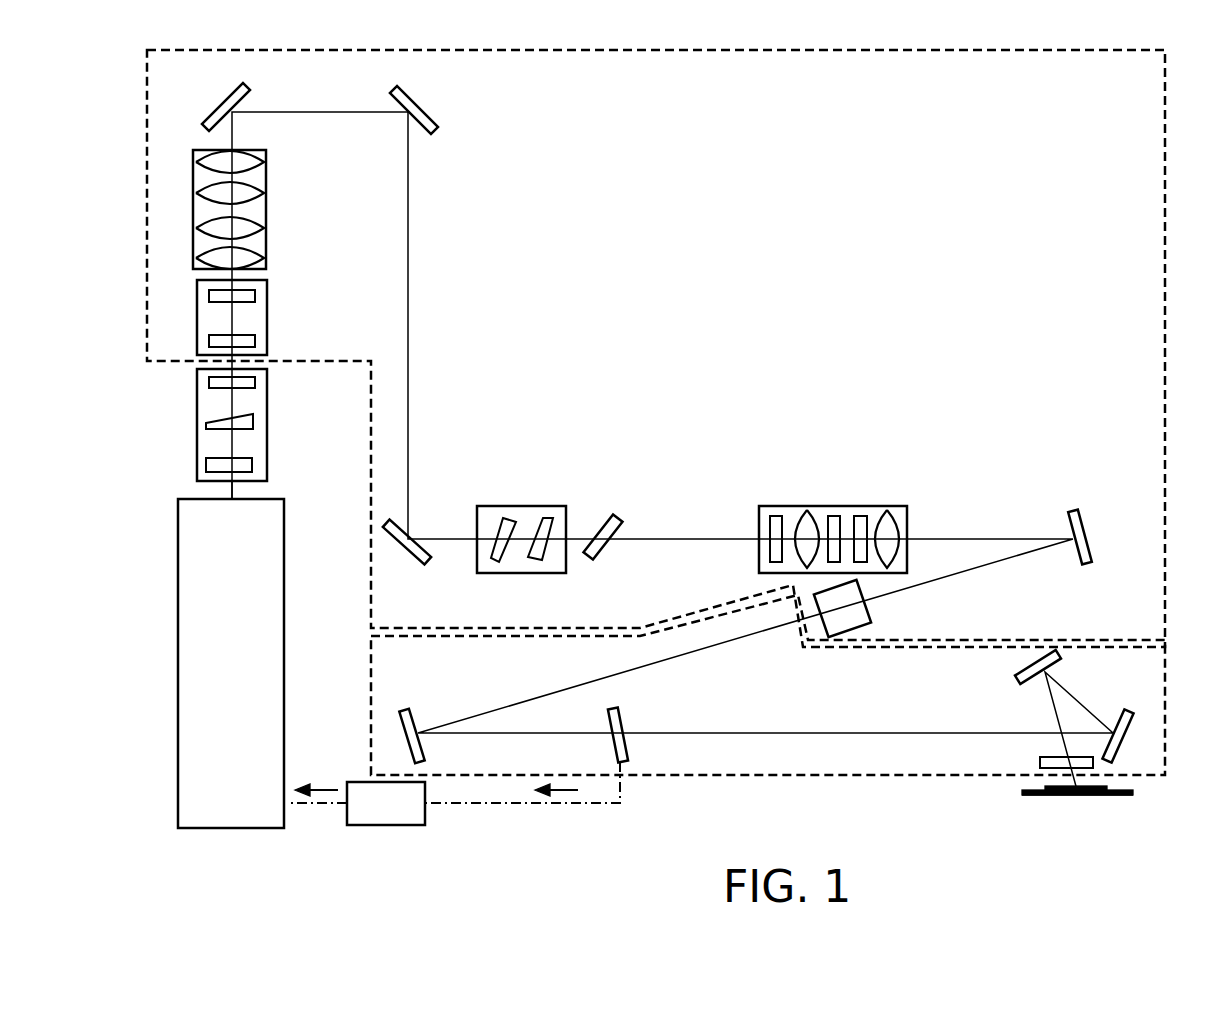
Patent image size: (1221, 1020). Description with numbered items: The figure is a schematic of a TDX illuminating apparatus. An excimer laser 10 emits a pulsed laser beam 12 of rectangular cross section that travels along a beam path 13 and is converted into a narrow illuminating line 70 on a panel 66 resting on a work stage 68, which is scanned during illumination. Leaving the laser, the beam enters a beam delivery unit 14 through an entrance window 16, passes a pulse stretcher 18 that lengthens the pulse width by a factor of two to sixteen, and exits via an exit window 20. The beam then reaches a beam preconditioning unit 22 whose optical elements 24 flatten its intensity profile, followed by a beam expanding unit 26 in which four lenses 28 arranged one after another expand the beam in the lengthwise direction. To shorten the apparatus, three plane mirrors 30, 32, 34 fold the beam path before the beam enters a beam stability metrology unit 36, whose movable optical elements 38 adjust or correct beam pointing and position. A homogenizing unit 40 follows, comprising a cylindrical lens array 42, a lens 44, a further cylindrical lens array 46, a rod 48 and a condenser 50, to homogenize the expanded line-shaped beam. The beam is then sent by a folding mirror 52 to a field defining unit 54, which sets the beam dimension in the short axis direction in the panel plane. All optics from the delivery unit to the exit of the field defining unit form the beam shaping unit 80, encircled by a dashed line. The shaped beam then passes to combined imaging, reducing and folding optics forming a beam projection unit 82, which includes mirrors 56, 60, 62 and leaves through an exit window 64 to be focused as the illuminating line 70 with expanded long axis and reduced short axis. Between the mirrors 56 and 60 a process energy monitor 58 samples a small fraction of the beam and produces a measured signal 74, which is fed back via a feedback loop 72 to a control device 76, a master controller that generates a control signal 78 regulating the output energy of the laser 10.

The excimer laser 10 is at (178, 600).
The pulsed laser beam 12 is at (227, 490).
The beam path 13 is at (410, 338).
The beam delivery unit 14 is at (197, 397).
The entrance window 16 is at (252, 463).
The pulse stretcher 18 is at (253, 428).
The exit window 20 is at (256, 381).
The beam preconditioning unit 22 is at (197, 295).
The optical elements 24 is at (257, 337).
The beam expanding unit 26 is at (193, 210).
The lenses 28 is at (266, 200).
The mirror 30 is at (218, 98).
The mirror 32 is at (440, 114).
The mirror 34 is at (614, 520).
The beam stability metrology unit 36 is at (535, 506).
The optical elements 38 is at (543, 562).
The homogenizing unit 40 is at (834, 516).
The cylindrical lens array 42 is at (776, 516).
The lens 44 is at (807, 510).
The further cylindrical lens array 46 is at (860, 516).
The rod 48 is at (892, 510).
The condenser 50 is at (759, 560).
The folding mirror 52 is at (1075, 510).
The field defining unit 54 is at (872, 610).
The mirror 56 is at (415, 712).
The process energy monitor 58 is at (620, 708).
The mirror 60 is at (1137, 724).
The mirror 62 is at (1020, 673).
The exit window 64 is at (1040, 760).
The panel 66 is at (1105, 795).
The work stage 68 is at (1085, 795).
The illuminating line 70 is at (1040, 794).
The feedback loop 72 is at (592, 803).
The measured signal 74 is at (558, 792).
The control device 76 is at (375, 826).
The control signal 78 is at (318, 790).
The beam shaping unit 80 is at (620, 50).
The beam projection unit 82 is at (795, 777).